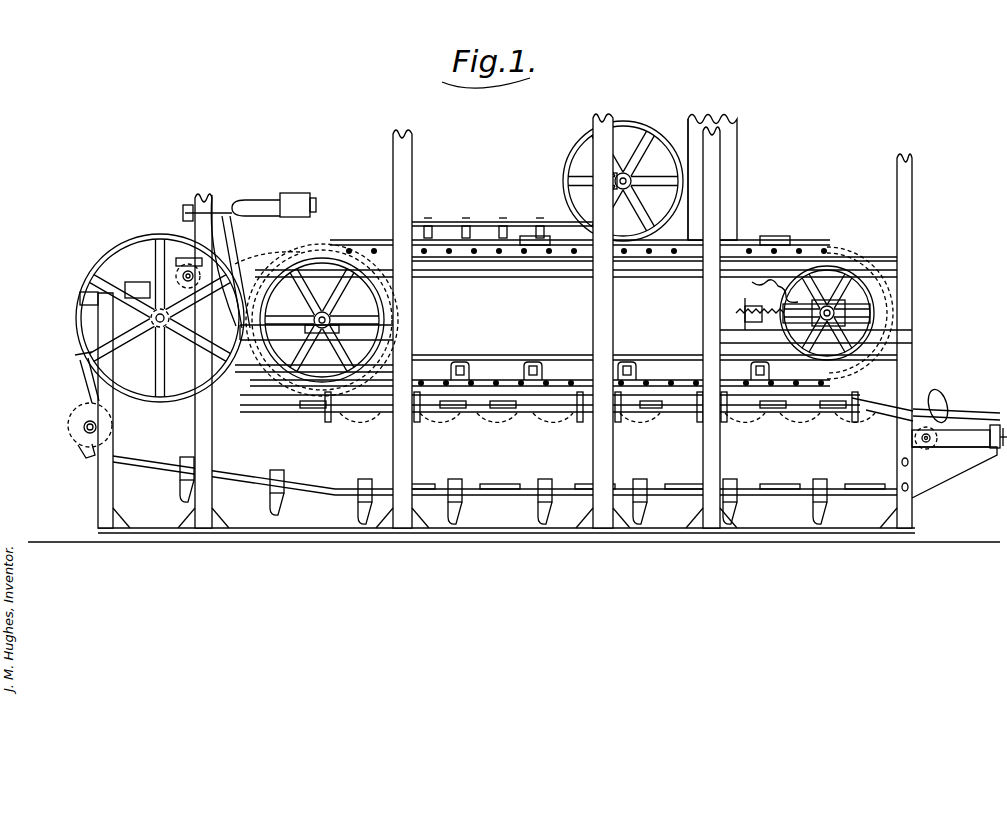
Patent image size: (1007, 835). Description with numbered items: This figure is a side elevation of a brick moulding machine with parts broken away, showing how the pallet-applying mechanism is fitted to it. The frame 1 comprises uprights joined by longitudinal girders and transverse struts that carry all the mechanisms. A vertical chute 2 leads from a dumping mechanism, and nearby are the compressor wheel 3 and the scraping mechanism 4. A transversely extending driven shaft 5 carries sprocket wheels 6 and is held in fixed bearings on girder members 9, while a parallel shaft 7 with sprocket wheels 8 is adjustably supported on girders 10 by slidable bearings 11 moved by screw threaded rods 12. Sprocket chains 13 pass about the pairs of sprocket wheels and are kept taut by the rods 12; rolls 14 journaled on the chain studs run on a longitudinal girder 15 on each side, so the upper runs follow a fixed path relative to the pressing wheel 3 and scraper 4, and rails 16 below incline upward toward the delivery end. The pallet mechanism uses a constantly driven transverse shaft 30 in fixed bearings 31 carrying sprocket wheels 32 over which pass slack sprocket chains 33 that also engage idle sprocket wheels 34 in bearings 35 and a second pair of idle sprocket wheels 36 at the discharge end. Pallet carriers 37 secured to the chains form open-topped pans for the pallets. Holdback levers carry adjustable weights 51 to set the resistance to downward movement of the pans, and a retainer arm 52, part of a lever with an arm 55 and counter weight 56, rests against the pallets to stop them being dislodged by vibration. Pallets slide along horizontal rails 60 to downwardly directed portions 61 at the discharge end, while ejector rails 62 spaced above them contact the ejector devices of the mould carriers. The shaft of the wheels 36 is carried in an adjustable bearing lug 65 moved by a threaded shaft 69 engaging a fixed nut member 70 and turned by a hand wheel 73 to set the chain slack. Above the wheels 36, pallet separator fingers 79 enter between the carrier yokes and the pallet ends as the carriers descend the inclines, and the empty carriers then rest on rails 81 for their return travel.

The frame 1 is at (95, 498).
The chute 2 is at (732, 130).
The compressor wheel 3 is at (632, 121).
The scraping mechanism 4 is at (497, 224).
The driven shaft 5 is at (330, 316).
The sprocket wheels 6 is at (383, 302).
The shaft 7 is at (836, 312).
The sprocket wheels 8 is at (762, 293).
The girder members 9 is at (363, 336).
The girders 10 is at (900, 336).
The slidable bearings 11 is at (823, 292).
The screw threaded rods 12 is at (745, 316).
The sprocket chains 13 is at (807, 252).
The rolls 14 is at (743, 246).
The longitudinal girder 15 is at (558, 265).
The rails 16 is at (482, 400).
The transverse shaft 30 is at (184, 270).
The fixed bearings 31 is at (217, 250).
The sprocket wheels 32 is at (174, 273).
The sprocket chains 33 is at (72, 410).
The idle sprocket wheels 34 is at (78, 428).
The bearings 35 is at (97, 426).
The idle sprocket wheels 36 is at (913, 437).
The pallet carriers 37 is at (654, 484).
The adjustable weights 51 is at (98, 300).
The retainer arm 52 is at (241, 233).
The arm 55 is at (263, 208).
The counter weight 56 is at (303, 200).
The rails 60 is at (336, 418).
The downwardly directed portions 61 is at (878, 418).
The ejector rails 62 is at (444, 361).
The adjustable bearing lug 65 is at (938, 448).
The threaded shaft 69 is at (958, 420).
The fixed nut member 70 is at (984, 424).
The hand wheel 73 is at (997, 462).
The pallet separator fingers 79 is at (927, 408).
The rails 81 is at (163, 476).